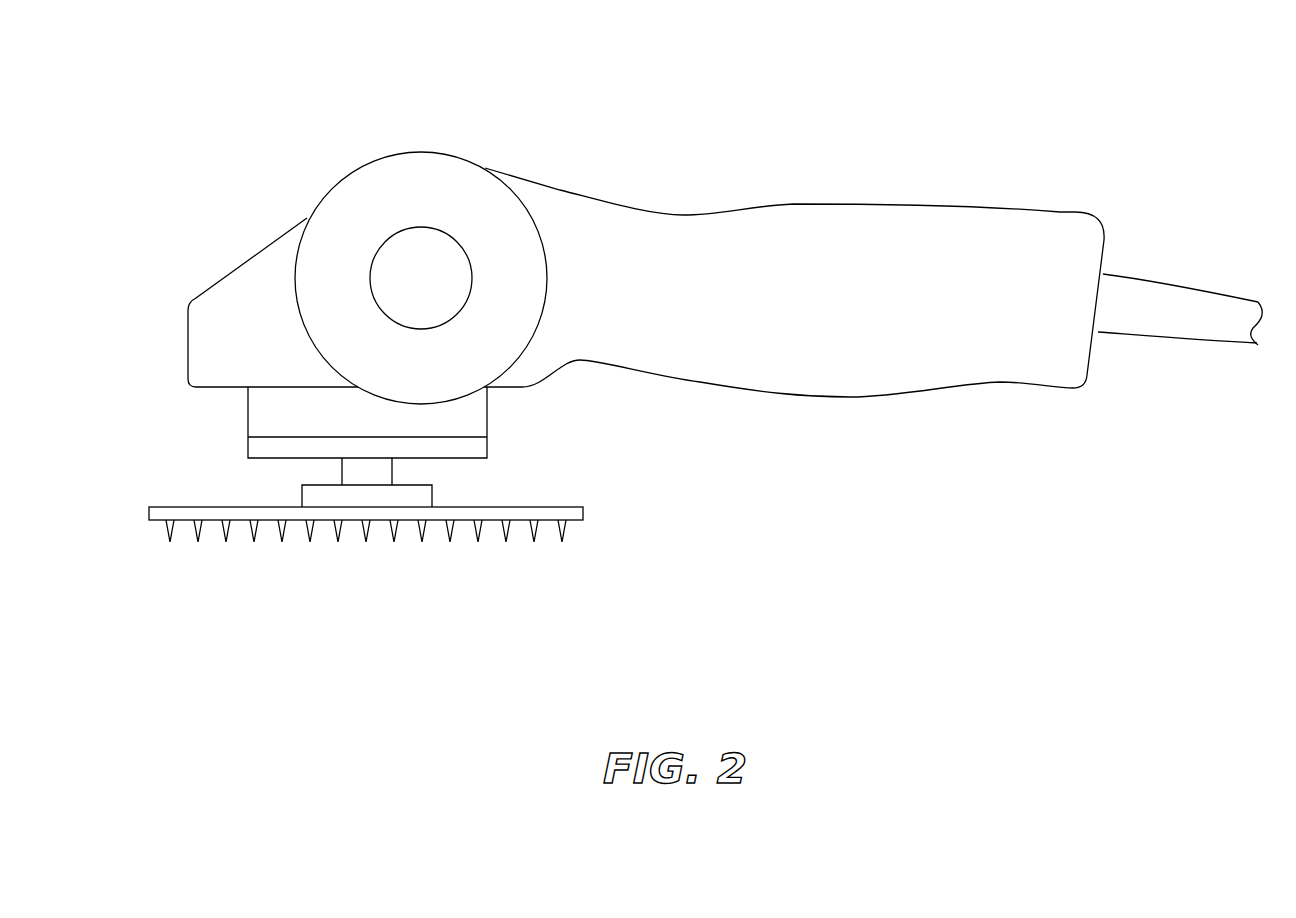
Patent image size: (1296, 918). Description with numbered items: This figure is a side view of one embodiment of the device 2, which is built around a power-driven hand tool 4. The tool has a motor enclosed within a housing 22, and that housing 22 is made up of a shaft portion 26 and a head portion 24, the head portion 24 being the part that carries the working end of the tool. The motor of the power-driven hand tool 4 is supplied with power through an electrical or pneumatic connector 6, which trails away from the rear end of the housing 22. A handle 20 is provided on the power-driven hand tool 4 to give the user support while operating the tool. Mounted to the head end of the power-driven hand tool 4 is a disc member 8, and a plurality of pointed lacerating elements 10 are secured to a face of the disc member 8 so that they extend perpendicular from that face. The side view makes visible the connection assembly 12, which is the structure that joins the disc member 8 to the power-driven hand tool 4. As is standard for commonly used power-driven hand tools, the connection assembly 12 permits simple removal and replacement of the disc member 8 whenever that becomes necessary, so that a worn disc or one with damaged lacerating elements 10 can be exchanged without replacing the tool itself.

The device 2 is at (539, 94).
The power-driven hand tool 4 is at (156, 165).
The electrical or pneumatic connector 6 is at (1177, 290).
The disc member 8 is at (586, 512).
The pointed lacerating elements 10 is at (312, 543).
The connection assembly 12 is at (500, 435).
The handle 20 is at (407, 290).
The housing 22 is at (762, 200).
The head portion 24 is at (253, 249).
The shaft portion 26 is at (587, 410).